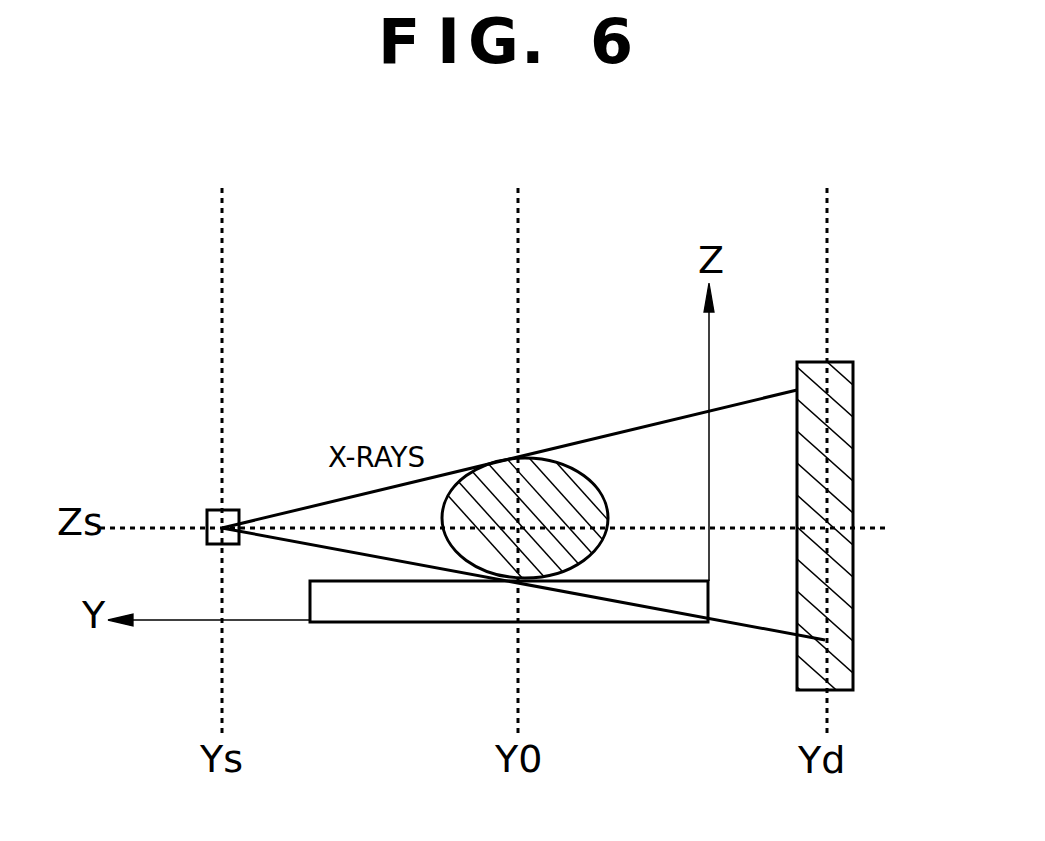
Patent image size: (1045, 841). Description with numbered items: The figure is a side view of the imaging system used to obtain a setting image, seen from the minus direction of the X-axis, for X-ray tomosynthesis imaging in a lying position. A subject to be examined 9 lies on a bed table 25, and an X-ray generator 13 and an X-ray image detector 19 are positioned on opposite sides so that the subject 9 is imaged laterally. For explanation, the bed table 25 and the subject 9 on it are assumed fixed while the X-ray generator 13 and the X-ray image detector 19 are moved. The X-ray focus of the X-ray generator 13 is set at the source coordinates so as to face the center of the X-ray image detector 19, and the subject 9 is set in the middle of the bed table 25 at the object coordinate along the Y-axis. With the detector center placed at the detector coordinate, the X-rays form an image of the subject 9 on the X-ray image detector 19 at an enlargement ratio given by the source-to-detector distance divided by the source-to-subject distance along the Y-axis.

The X-ray generator 13 is at (208, 512).
The subject to be examined 9 is at (608, 492).
The bed table 25 is at (579, 613).
The X-ray image detector 19 is at (855, 418).